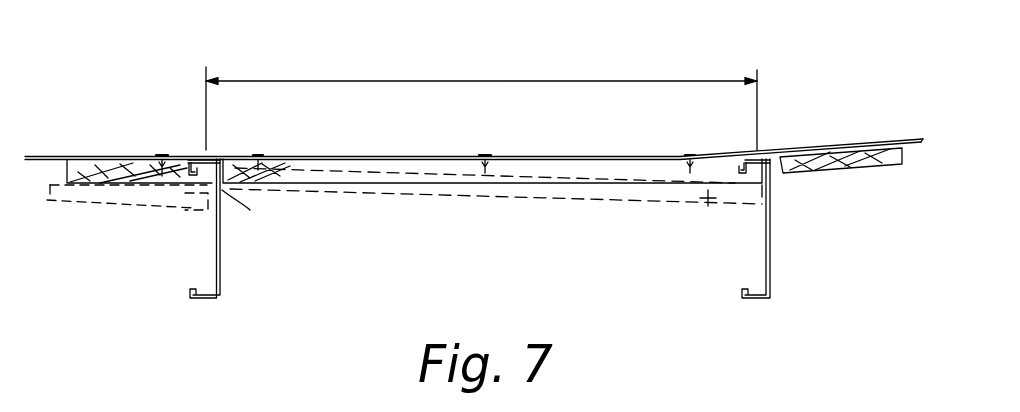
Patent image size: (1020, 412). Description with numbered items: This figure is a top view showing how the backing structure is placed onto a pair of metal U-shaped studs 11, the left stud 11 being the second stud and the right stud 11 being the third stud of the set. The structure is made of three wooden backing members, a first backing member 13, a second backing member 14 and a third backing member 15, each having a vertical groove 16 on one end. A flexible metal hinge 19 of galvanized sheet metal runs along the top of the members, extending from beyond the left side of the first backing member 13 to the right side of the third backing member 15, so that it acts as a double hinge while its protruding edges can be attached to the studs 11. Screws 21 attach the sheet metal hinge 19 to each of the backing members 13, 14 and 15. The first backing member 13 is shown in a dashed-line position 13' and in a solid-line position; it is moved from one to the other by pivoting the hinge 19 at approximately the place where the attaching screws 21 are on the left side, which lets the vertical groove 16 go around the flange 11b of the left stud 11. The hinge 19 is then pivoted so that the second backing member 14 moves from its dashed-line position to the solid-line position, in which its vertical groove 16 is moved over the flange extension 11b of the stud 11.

The stud 11 is at (220, 260).
The flange 11b is at (187, 178).
The first backing member 13 is at (139, 137).
The left panel in alternate position 13' is at (127, 229).
The second backing member 14 is at (618, 158).
The third backing member 15 is at (830, 146).
The vertical groove 16 is at (236, 203).
The flexible metal hinge 19 is at (332, 157).
The screw 21 is at (162, 156).